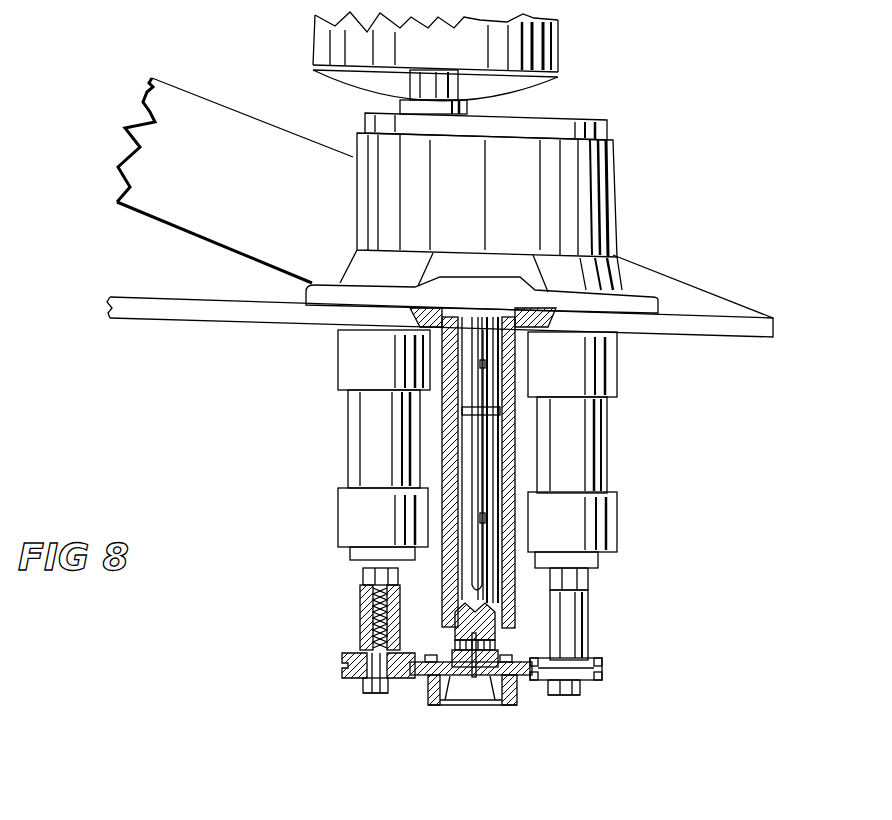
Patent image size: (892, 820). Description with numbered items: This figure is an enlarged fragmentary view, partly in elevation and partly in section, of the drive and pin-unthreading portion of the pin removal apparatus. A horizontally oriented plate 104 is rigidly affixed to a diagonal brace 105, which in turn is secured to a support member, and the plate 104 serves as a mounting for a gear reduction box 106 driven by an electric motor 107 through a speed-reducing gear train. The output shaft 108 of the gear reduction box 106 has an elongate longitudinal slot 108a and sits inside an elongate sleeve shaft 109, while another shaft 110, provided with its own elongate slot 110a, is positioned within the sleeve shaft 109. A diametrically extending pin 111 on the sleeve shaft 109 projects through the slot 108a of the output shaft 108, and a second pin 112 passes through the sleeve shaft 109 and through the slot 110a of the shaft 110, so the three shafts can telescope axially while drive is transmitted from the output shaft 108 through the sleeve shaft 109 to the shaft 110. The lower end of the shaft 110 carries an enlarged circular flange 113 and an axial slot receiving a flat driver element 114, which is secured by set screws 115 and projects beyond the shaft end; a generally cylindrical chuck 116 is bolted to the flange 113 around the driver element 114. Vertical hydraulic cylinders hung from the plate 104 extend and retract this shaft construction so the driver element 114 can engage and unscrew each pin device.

The plate 104 is at (732, 318).
The diagonal brace 105 is at (165, 112).
The gear reduction box 106 is at (617, 176).
The electric motor 107 is at (558, 42).
The output shaft 108 is at (467, 390).
The elongate longitudinal slot 108a is at (478, 386).
The sleeve shaft 109 is at (475, 452).
The shaft 110 is at (488, 480).
The elongate slot 110a is at (480, 453).
The pin 111 is at (482, 366).
The second pin 112 is at (478, 518).
The circular flange 113 is at (525, 676).
The driver element 114 is at (474, 680).
The set screws 115 is at (490, 692).
The chuck 116 is at (440, 705).